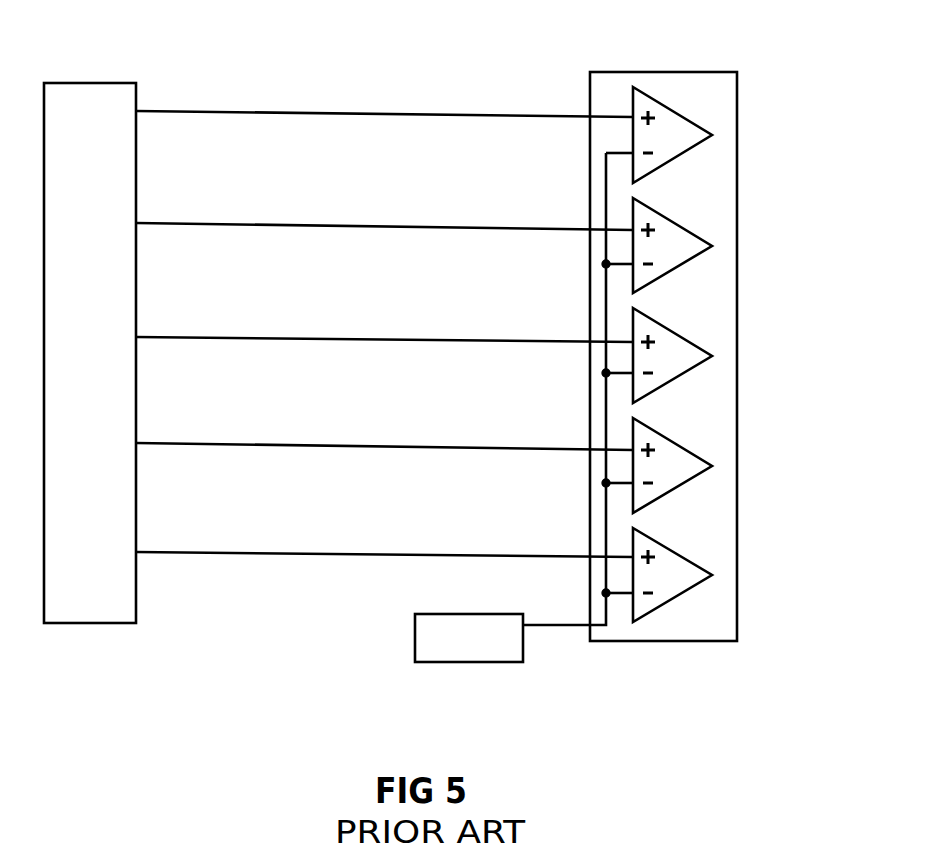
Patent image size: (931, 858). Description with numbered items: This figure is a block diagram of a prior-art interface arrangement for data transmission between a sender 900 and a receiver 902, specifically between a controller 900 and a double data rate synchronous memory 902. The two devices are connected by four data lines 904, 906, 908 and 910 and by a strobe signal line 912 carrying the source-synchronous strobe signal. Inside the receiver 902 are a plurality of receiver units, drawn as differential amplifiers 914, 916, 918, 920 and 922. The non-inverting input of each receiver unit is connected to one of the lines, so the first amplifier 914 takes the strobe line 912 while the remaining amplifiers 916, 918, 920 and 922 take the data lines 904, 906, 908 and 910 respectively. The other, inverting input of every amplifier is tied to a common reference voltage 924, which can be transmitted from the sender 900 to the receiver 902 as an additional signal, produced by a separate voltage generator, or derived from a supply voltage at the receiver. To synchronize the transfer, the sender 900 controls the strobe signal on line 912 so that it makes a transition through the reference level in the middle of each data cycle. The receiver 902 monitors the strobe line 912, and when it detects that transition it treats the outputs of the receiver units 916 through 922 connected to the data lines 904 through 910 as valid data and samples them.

The sender 900 is at (102, 623).
The receiver 902 is at (682, 642).
The data line 904 is at (405, 227).
The data line 906 is at (417, 338).
The data line 908 is at (428, 445).
The data line 910 is at (248, 554).
The strobe signal line 912 is at (176, 111).
The receiver unit 914 is at (666, 102).
The receiver unit 916 is at (685, 224).
The receiver unit 918 is at (685, 335).
The receiver unit 920 is at (693, 448).
The receiver unit 922 is at (693, 558).
The reference voltage 924 is at (470, 662).